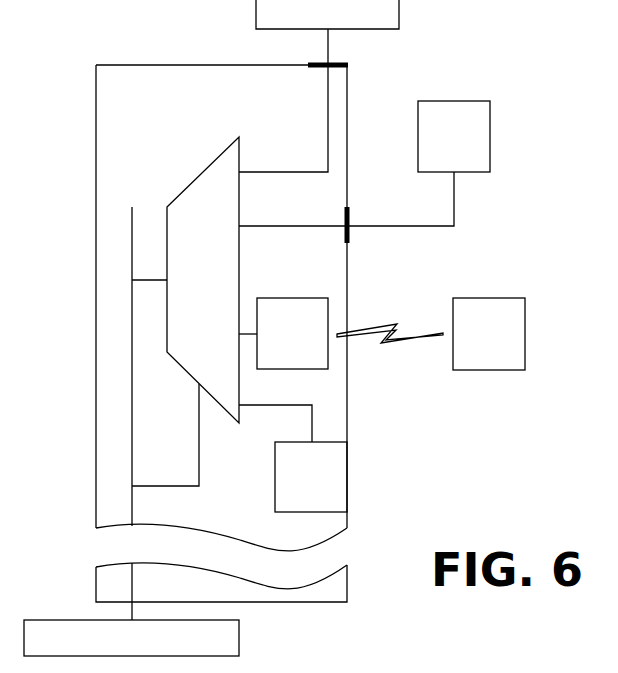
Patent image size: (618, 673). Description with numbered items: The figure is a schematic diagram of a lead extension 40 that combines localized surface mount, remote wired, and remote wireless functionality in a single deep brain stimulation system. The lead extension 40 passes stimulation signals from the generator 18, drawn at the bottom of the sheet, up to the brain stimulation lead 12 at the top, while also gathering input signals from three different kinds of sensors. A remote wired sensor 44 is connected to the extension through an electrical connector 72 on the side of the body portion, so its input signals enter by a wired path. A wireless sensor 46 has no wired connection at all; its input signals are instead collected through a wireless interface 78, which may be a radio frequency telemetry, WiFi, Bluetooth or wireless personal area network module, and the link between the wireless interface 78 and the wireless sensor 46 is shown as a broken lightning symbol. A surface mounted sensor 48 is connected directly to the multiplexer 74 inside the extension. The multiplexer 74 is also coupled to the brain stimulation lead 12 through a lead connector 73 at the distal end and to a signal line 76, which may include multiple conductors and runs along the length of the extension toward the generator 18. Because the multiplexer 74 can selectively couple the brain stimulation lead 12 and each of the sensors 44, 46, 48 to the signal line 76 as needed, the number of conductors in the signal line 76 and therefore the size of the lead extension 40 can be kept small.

The brain stimulation lead 12 is at (399, 10).
The generator 18 is at (239, 637).
The lead extension 40 is at (96, 190).
The remote wired sensor 44 is at (490, 137).
The wireless sensor 46 is at (525, 334).
The surface mounted sensor 48 is at (347, 477).
The electrical connector 72 is at (347, 220).
The lead connector 73 is at (318, 65).
The multiplexer 74 is at (239, 243).
The signal line 76 is at (132, 262).
The wireless interface 78 is at (328, 317).